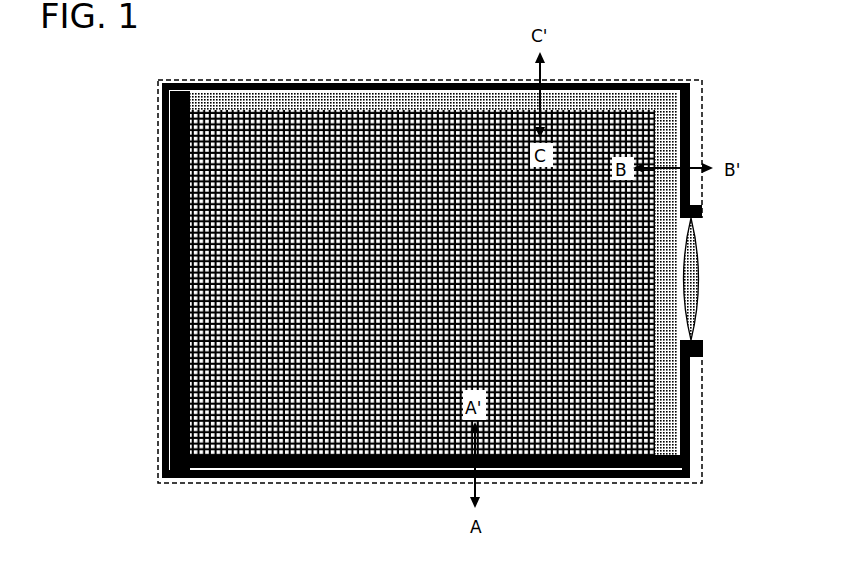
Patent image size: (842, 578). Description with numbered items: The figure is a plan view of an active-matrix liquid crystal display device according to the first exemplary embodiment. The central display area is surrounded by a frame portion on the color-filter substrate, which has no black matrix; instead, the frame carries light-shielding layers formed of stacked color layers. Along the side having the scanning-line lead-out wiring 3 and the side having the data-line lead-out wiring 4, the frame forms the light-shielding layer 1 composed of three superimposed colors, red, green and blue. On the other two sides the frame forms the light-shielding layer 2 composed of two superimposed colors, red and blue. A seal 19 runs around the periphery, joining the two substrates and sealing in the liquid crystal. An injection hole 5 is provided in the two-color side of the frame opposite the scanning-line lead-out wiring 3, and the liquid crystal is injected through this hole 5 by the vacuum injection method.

The light-shielding layer 1 is at (161, 108).
The light-shielding layer 2 is at (597, 97).
The scanning-line lead-out wiring 3 is at (154, 407).
The data-line lead-out wiring 4 is at (231, 485).
The injection hole 5 is at (701, 292).
The seal 19 is at (384, 80).